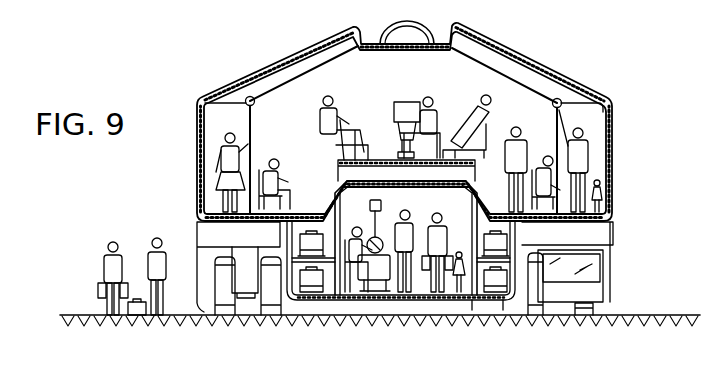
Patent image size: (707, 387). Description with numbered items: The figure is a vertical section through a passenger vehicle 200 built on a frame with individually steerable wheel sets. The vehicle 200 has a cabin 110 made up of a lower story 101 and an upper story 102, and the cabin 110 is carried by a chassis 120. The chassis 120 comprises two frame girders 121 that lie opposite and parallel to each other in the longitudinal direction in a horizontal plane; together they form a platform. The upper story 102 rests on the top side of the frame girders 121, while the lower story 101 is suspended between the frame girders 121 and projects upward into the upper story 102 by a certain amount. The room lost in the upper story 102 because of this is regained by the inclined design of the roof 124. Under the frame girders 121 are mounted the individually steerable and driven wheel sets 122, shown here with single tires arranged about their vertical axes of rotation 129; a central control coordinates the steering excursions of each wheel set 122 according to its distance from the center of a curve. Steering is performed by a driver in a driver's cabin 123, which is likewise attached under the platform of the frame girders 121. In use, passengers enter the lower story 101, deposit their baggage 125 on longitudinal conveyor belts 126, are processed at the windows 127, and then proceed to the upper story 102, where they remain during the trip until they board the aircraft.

The vehicle 200 is at (562, 48).
The cabin 110 is at (592, 82).
The roof 124 is at (497, 46).
The upper story 102 is at (298, 92).
The chassis 120 is at (618, 243).
The frame girders 121 is at (200, 224).
The lower story 101 is at (317, 318).
The windows 127 is at (384, 318).
The vertical axes of rotation 129 is at (249, 318).
The wheel sets 122 is at (207, 318).
The driver's cabin 123 is at (598, 270).
The baggage 125 is at (474, 318).
The conveyor belts 126 is at (505, 318).